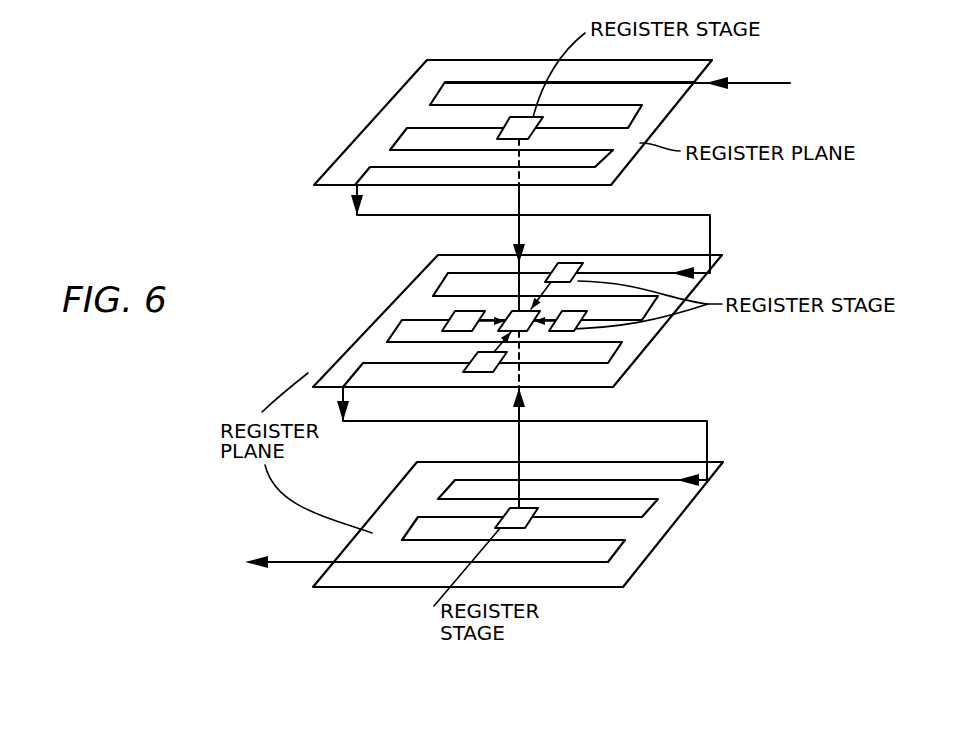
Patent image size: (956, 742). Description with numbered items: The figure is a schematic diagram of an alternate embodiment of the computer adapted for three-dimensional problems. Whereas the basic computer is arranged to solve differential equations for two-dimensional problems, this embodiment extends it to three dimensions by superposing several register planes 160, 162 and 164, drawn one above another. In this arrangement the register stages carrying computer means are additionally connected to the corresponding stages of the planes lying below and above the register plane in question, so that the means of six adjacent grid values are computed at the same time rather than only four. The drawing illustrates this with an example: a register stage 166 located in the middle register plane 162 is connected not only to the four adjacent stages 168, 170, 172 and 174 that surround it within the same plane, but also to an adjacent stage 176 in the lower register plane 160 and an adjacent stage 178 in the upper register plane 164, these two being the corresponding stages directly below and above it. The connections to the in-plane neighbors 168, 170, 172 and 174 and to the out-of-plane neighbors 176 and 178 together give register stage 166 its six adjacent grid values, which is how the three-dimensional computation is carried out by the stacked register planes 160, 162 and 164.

The register plane 160 is at (407, 498).
The register plane 162 is at (398, 308).
The register plane 164 is at (357, 150).
The register stage 166 is at (534, 326).
The register stage 168 is at (465, 309).
The register stage 170 is at (584, 310).
The register stage 172 is at (468, 372).
The register stage 174 is at (568, 266).
The register stage 176 is at (528, 526).
The register stage 178 is at (545, 119).